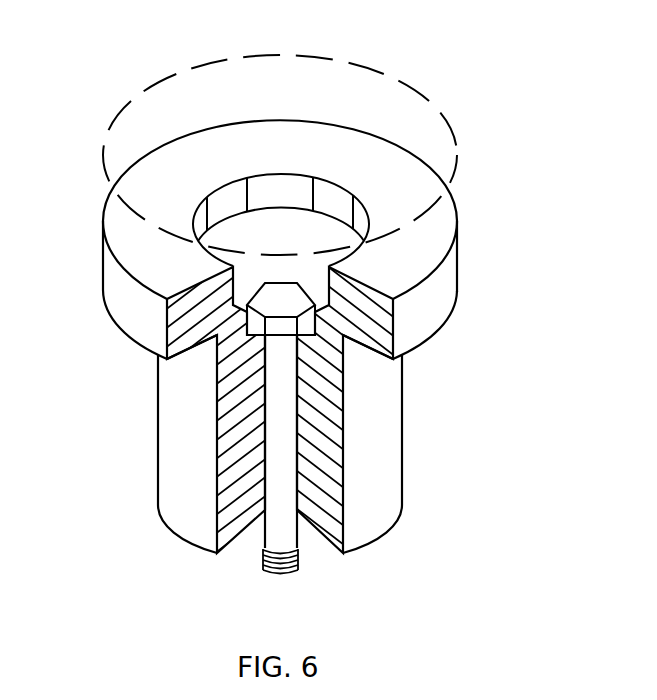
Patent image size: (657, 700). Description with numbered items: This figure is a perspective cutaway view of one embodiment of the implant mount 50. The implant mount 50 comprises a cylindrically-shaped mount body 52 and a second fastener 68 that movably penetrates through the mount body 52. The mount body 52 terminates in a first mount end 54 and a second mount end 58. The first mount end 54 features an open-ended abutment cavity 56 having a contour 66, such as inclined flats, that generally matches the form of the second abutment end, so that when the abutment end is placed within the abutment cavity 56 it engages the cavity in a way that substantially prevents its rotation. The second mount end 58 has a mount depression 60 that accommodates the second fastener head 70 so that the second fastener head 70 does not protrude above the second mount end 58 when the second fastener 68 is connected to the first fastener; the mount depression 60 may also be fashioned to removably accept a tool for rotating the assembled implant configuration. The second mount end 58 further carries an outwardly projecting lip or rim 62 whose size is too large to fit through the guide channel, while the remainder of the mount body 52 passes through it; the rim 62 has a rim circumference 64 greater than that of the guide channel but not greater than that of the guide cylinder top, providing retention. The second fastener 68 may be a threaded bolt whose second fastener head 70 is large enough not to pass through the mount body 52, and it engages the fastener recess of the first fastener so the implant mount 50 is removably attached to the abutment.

The implant mount 50 is at (552, 236).
The mount body 52 is at (387, 482).
The first mount end 54 is at (236, 547).
The abutment cavity 56 is at (243, 546).
The second mount end 58 is at (130, 244).
The mount depression 60 is at (299, 226).
The rim 62 is at (407, 170).
The rim circumference 64 is at (107, 142).
The contour 66 is at (324, 554).
The second fastener 68 is at (284, 410).
The second fastener head 70 is at (282, 329).